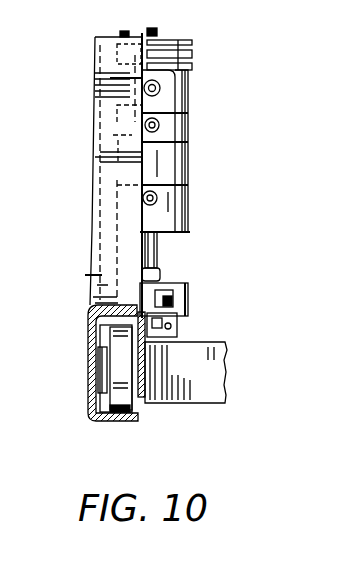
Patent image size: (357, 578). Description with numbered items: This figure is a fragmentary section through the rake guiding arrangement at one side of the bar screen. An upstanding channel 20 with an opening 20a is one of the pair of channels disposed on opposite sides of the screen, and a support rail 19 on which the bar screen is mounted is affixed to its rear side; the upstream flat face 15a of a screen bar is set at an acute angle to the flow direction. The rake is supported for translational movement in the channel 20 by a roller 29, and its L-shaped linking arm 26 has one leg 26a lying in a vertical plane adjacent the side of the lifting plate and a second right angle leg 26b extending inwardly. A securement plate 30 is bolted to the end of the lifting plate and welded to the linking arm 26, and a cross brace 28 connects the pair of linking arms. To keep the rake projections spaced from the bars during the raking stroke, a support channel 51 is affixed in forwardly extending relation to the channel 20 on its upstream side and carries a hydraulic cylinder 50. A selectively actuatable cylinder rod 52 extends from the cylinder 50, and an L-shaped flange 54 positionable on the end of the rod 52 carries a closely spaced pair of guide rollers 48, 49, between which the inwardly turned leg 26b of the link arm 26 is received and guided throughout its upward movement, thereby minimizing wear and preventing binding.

The support channel 51 is at (97, 277).
The hydraulic cylinder 50 is at (190, 112).
The cylinder rod 52 is at (168, 243).
The L-shaped flange 54 is at (170, 278).
The guide roller 48 is at (182, 283).
The second right angle leg 26b is at (183, 308).
The guide roller 49 is at (177, 332).
The cross brace 28 is at (211, 400).
The upstanding channel 20 is at (88, 402).
The opening 20a is at (25, 63).
The linking arm 26 is at (110, 300).
The leg 26a is at (130, 374).
The roller 29 is at (95, 342).
The securement plate 30 is at (67, 98).
The upstream flat face 15a is at (72, 148).
The support rail 19 is at (7, 211).